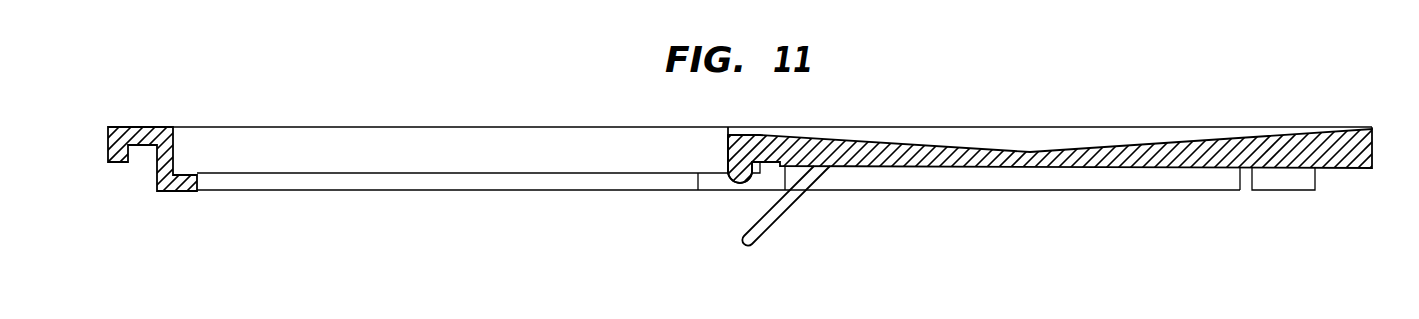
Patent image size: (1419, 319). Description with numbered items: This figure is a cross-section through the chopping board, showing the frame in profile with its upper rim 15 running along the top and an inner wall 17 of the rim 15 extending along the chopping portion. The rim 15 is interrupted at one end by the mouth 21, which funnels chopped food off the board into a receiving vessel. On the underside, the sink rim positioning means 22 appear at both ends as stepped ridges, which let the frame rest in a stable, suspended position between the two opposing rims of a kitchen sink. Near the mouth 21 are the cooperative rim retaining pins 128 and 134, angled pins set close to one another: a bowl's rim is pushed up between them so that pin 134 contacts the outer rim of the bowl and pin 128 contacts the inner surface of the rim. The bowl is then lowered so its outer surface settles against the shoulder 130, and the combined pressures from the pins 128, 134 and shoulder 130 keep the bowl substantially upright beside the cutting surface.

The rim 15 is at (1365, 130).
The inner wall 17 is at (1018, 138).
The mouth 21 is at (742, 133).
The sink rim positioning means 22 is at (142, 176).
The rim retaining pin 128 is at (738, 185).
The shoulder 130 is at (707, 194).
The rim retaining pin 134 is at (778, 213).